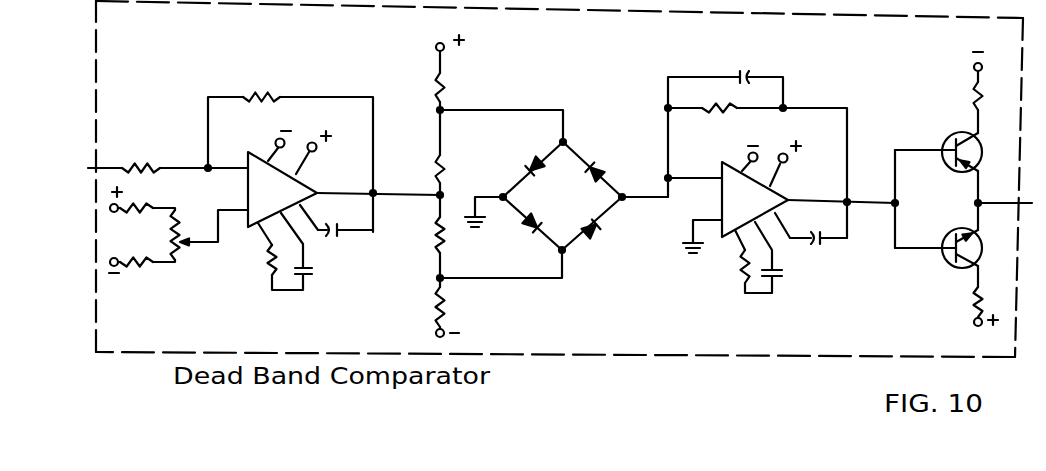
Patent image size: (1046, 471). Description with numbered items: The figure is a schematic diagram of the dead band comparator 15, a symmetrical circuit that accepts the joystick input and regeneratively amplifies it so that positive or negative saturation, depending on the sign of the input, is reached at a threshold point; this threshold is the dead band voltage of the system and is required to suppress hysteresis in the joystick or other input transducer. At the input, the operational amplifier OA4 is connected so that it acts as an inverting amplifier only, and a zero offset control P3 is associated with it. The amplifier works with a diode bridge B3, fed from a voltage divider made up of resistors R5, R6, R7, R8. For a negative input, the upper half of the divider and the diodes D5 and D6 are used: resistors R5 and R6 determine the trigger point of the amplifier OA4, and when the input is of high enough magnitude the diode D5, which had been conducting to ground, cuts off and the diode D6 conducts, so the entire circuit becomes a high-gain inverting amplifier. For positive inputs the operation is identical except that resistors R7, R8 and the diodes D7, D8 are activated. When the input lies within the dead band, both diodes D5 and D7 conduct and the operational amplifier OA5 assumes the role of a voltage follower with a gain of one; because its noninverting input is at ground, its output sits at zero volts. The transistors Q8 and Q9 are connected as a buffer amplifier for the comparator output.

The dead band comparator 15 is at (97, 44).
The zero offset control P3 is at (184, 220).
The operational amplifier OA4 is at (250, 228).
The resistor R5 is at (436, 81).
The resistor R6 is at (437, 162).
The resistor R7 is at (436, 238).
The resistor R8 is at (436, 318).
The diode D5 is at (538, 160).
The diode D6 is at (598, 151).
The diode D7 is at (535, 239).
The diode D8 is at (601, 233).
The diode bridge B3 is at (552, 212).
The operational amplifier OA5 is at (722, 241).
The transistor Q8 is at (948, 139).
The transistor Q9 is at (945, 260).